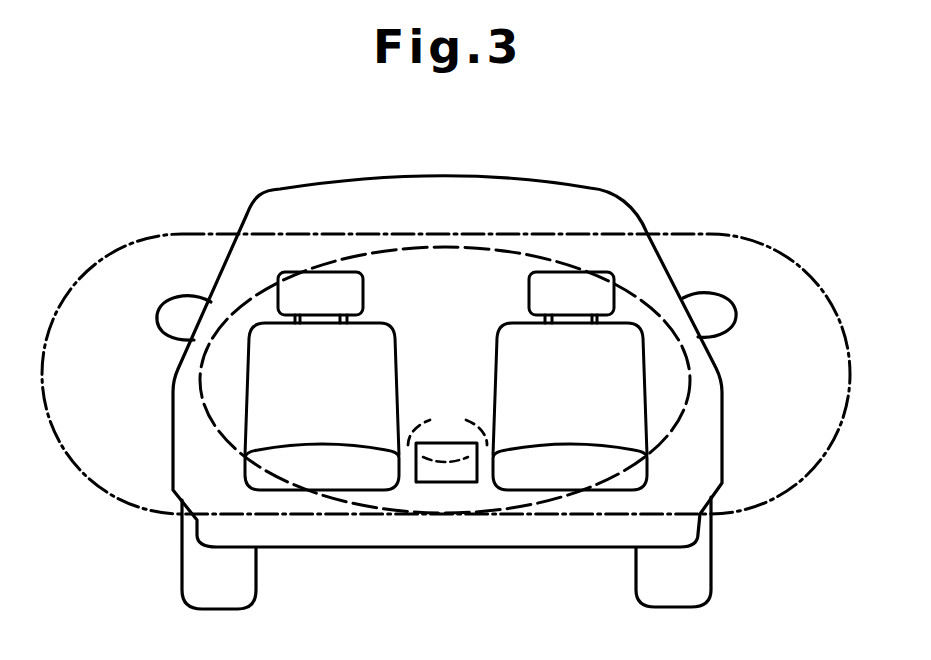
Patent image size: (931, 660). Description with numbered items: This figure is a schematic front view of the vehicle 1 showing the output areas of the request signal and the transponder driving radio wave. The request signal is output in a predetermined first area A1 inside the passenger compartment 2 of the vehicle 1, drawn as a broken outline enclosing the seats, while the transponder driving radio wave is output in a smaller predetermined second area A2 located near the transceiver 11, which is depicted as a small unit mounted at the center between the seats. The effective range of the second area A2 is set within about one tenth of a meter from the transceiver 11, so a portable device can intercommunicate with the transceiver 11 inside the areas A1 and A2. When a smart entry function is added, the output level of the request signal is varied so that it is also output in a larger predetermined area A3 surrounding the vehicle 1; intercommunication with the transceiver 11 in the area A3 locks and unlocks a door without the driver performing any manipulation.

The vehicle 1 is at (599, 182).
The passenger compartment 2 is at (456, 218).
The transceiver 11 is at (441, 482).
The first area A1 is at (466, 347).
The second area A2 is at (461, 437).
The predetermined area near the vehicle A3 is at (818, 387).